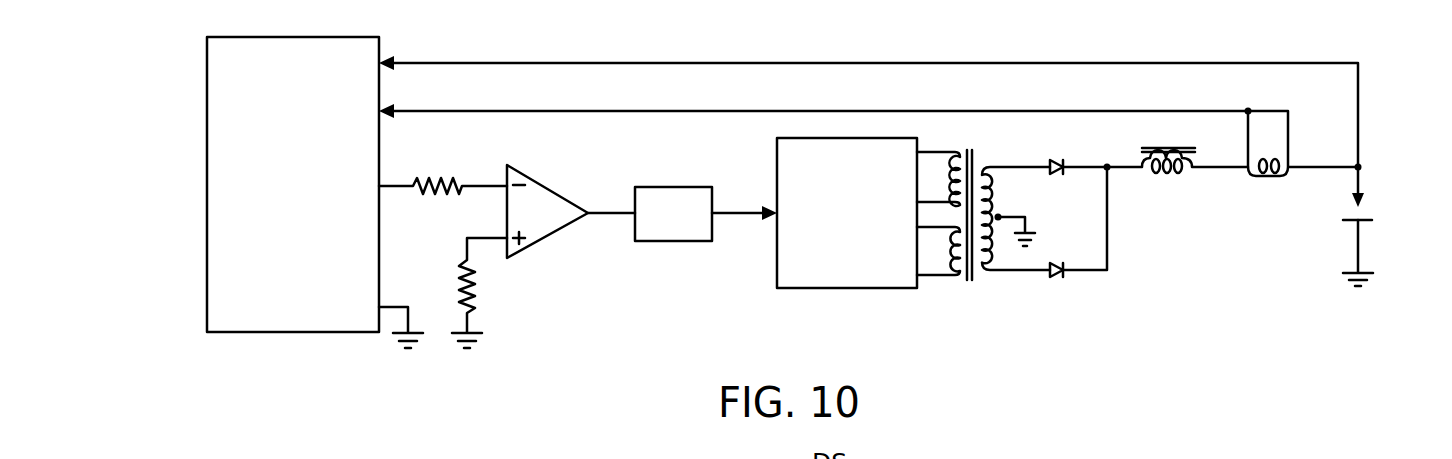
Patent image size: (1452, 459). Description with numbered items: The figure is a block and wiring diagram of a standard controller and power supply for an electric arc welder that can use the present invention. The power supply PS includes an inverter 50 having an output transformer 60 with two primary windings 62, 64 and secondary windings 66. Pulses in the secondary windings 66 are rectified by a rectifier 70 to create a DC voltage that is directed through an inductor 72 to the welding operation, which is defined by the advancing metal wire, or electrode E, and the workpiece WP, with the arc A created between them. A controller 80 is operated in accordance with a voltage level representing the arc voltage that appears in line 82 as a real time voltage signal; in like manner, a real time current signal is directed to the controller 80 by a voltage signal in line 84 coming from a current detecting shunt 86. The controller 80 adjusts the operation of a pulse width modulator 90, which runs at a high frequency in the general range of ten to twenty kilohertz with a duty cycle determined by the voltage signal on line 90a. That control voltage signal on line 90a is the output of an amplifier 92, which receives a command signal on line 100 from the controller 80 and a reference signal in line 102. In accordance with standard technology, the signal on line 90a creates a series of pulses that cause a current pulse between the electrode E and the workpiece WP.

The controller 80 is at (207, 120).
The line 82 is at (507, 63).
The line 84 is at (510, 111).
The line 100 is at (410, 184).
The amplifier 92 is at (550, 183).
The line 102 is at (483, 238).
The line 90a is at (610, 208).
The pulse width modulator 90 is at (672, 242).
The inverter 50 is at (793, 292).
The power supply PS is at (883, 303).
The output transformer 60 is at (975, 282).
The primary winding 62 is at (949, 152).
The primary winding 64 is at (952, 262).
The secondary windings 66 is at (998, 195).
The rectifier 70 is at (1072, 282).
The inductor 72 is at (1167, 168).
The current detecting shunt 86 is at (1267, 177).
The electrode E is at (1366, 205).
The arc A is at (1352, 215).
The workpiece WP is at (1368, 222).